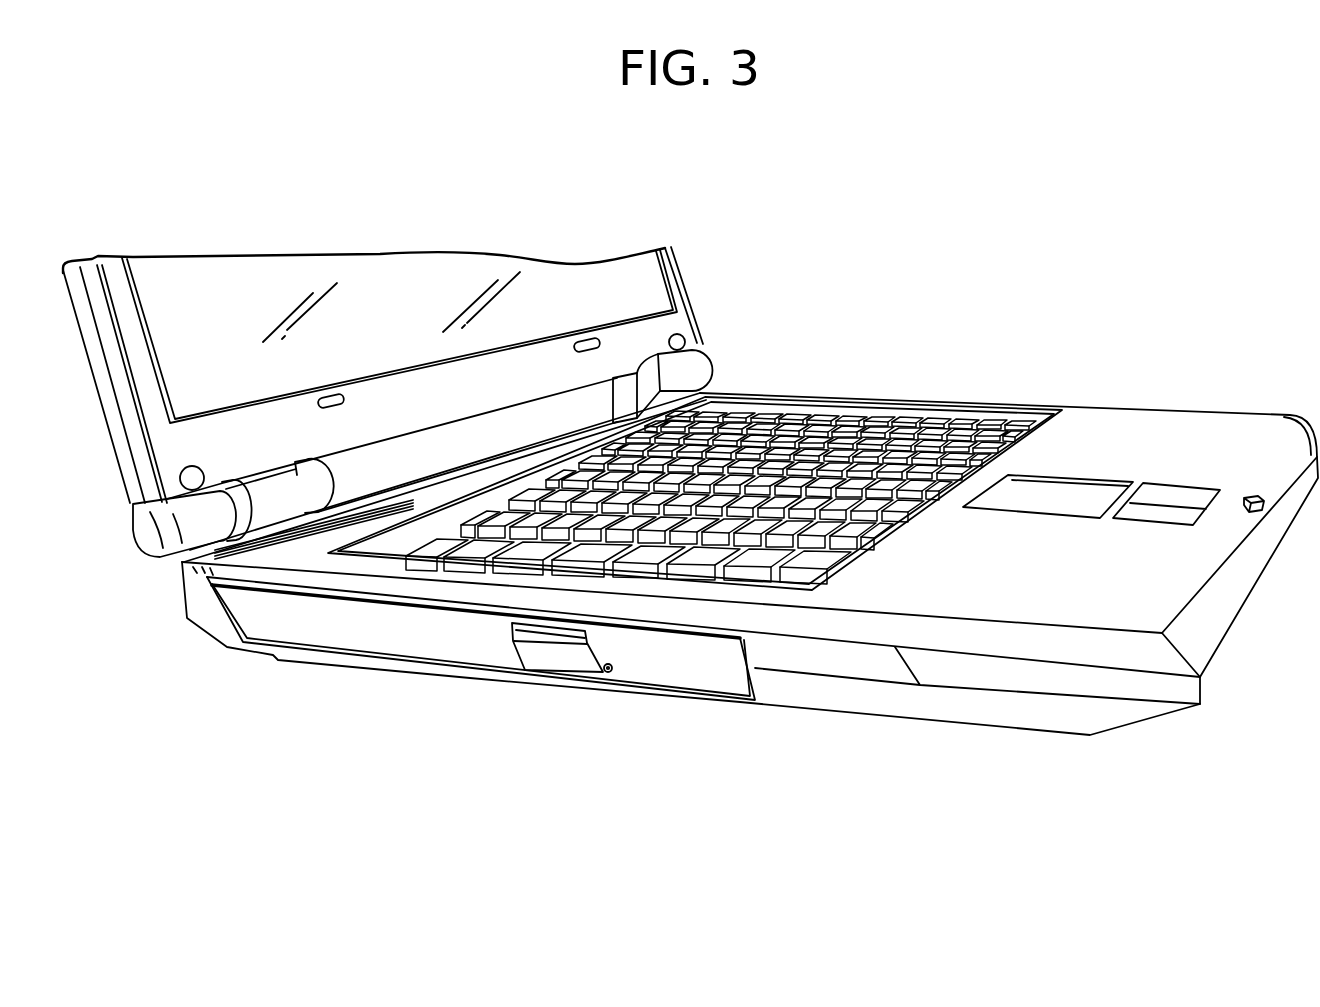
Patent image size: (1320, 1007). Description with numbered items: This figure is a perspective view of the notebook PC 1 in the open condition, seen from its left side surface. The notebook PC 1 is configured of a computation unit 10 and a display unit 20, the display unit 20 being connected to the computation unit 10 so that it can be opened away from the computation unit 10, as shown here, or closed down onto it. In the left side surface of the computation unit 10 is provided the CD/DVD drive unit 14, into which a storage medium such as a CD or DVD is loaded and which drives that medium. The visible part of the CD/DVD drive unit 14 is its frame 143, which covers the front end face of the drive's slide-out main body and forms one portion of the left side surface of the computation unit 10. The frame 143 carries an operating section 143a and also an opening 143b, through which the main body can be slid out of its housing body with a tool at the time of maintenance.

The notebook PC 1 is at (958, 307).
The computation unit 10 is at (1218, 377).
The CD/DVD drive unit 14 is at (390, 724).
The display unit 20 is at (712, 328).
The frame 143 is at (707, 682).
The operating section 143a is at (550, 655).
The opening 143b is at (606, 672).